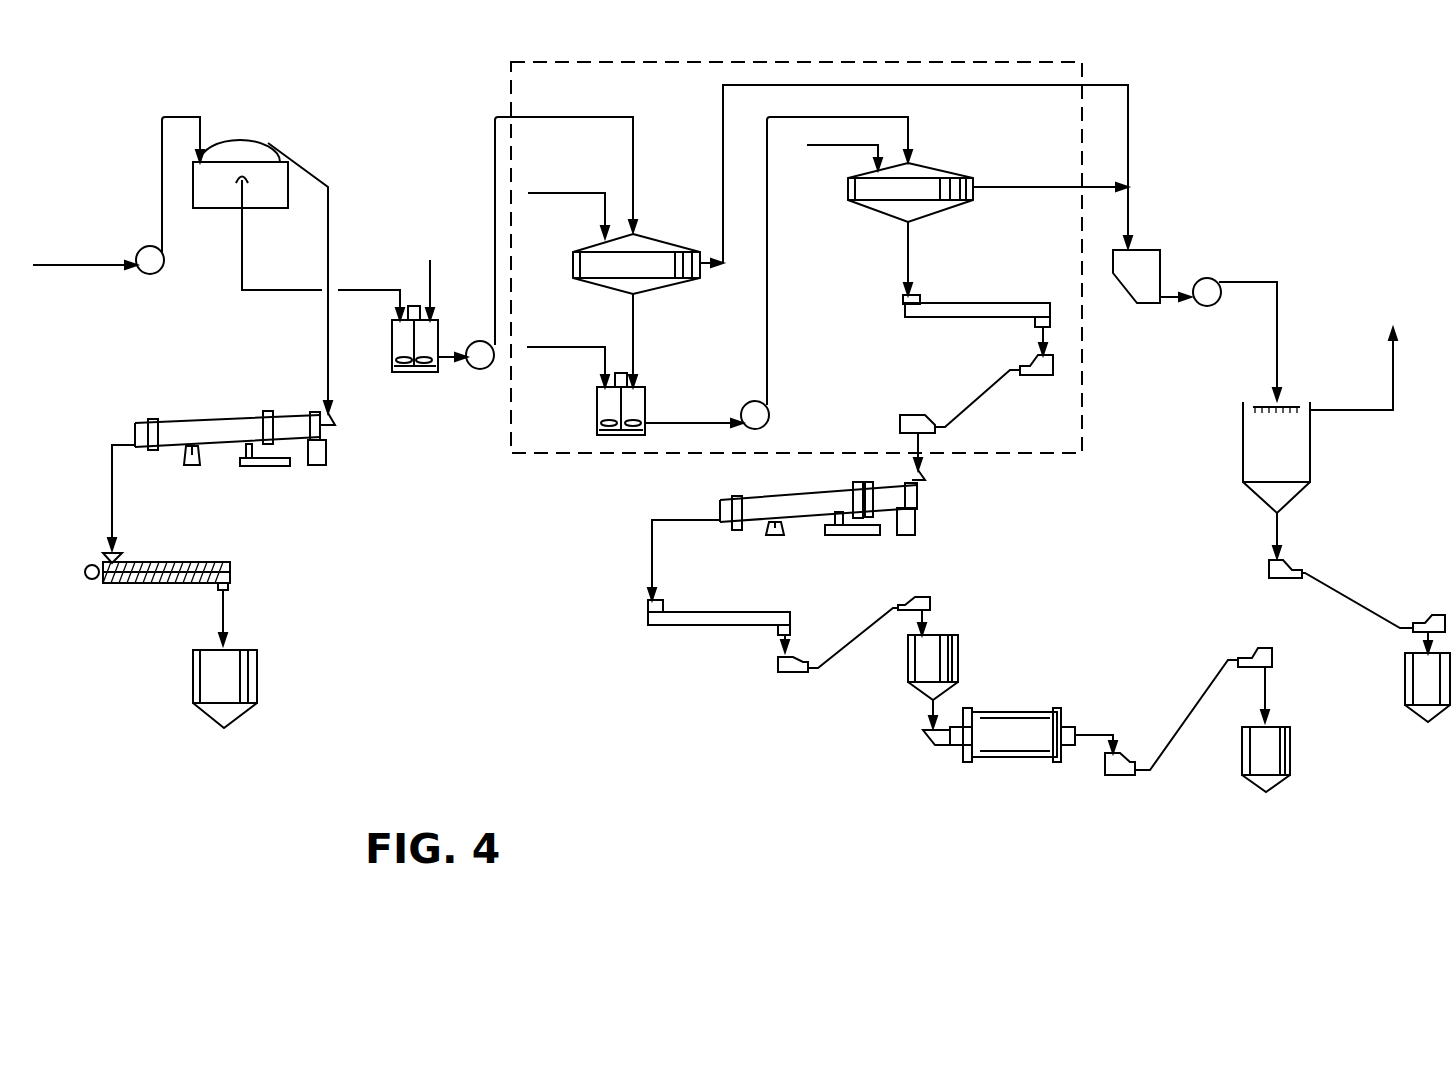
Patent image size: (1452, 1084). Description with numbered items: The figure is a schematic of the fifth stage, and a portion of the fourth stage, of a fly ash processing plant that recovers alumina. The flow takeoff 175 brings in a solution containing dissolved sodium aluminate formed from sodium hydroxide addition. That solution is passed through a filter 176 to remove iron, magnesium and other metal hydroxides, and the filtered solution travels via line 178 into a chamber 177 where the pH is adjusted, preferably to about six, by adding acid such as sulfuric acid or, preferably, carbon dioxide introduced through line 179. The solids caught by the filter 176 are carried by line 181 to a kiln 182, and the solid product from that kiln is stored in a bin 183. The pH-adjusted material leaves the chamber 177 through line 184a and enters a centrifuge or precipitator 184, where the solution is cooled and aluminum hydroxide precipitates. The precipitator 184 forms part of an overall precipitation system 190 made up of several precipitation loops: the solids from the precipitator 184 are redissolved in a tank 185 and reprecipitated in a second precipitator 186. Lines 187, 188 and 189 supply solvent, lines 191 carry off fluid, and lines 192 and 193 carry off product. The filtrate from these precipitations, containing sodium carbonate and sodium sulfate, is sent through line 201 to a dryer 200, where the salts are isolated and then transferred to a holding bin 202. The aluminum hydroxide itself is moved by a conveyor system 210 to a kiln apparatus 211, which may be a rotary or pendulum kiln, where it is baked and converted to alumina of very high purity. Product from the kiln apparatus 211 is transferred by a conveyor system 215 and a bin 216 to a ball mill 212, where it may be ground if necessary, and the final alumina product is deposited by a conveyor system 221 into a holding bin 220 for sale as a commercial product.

The flow takeoff 175 is at (107, 268).
The filter 176 is at (238, 142).
The chamber 177 is at (430, 375).
The line 178 is at (273, 290).
The line 179 is at (432, 275).
The line 181 is at (330, 220).
The kiln 182 is at (212, 418).
The bin 183 is at (262, 672).
The centrifuge or precipitator 184 is at (648, 235).
The line 184a is at (555, 117).
The tank 185 is at (648, 398).
The precipitator 186 is at (935, 167).
The line 187 is at (578, 193).
The line 188 is at (585, 347).
The line 189 is at (843, 148).
The precipitation system 190 is at (500, 76).
The lines 191 is at (722, 150).
The line 192 is at (638, 337).
The line 193 is at (905, 243).
The dryer 200 is at (1243, 460).
The line 201 is at (1280, 300).
The holding bin 202 is at (1405, 688).
The conveyor system 210 is at (978, 328).
The kiln apparatus 211 is at (805, 515).
The ball mill 212 is at (1015, 760).
The conveyor system 215 is at (680, 628).
The bin 216 is at (955, 637).
The holding bin 220 is at (1290, 750).
The conveyor system 221 is at (1190, 688).